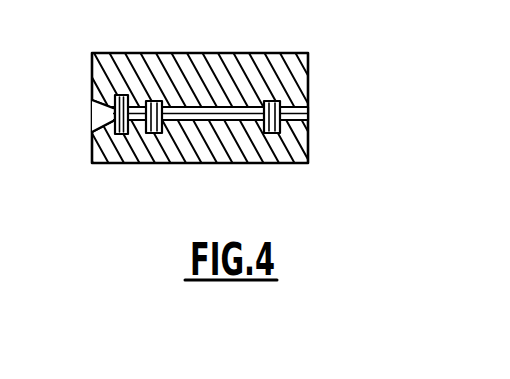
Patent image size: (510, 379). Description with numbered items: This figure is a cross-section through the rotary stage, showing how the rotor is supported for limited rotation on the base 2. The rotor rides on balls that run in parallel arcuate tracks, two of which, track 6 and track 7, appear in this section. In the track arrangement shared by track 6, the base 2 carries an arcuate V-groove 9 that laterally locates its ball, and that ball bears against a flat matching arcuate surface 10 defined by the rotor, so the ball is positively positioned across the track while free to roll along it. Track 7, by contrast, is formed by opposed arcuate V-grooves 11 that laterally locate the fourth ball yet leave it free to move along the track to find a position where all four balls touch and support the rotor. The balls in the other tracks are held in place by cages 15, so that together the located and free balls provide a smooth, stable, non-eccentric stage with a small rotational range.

The base 2 is at (310, 150).
The track 6 is at (165, 105).
The track 7 is at (110, 106).
The arcuate V-groove 9 is at (310, 134).
The flat matching arcuate surface 10 is at (152, 101).
The opposed arcuate V-grooves 11 is at (128, 95).
The cages 15 is at (311, 80).